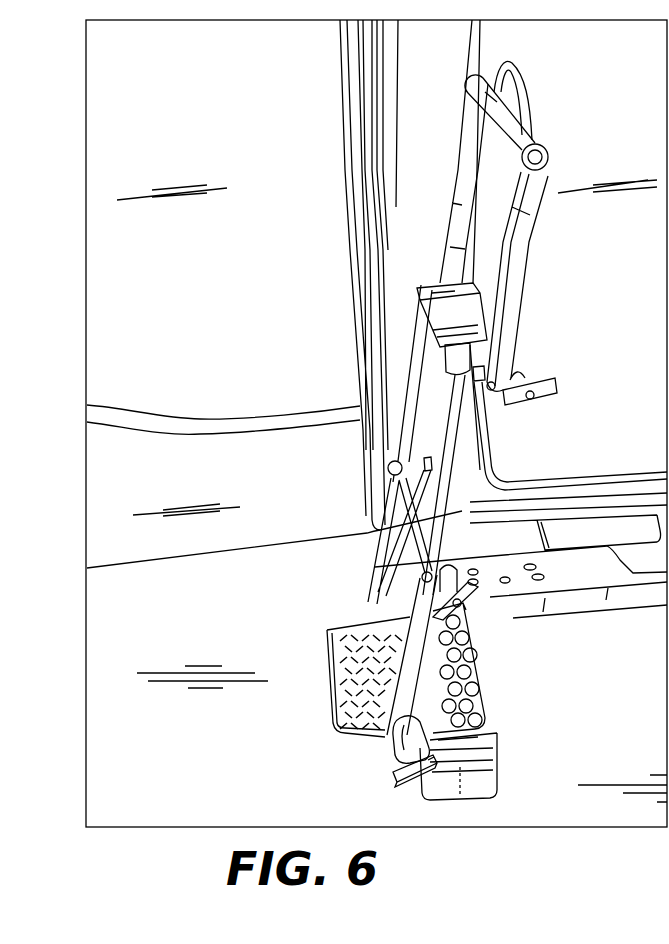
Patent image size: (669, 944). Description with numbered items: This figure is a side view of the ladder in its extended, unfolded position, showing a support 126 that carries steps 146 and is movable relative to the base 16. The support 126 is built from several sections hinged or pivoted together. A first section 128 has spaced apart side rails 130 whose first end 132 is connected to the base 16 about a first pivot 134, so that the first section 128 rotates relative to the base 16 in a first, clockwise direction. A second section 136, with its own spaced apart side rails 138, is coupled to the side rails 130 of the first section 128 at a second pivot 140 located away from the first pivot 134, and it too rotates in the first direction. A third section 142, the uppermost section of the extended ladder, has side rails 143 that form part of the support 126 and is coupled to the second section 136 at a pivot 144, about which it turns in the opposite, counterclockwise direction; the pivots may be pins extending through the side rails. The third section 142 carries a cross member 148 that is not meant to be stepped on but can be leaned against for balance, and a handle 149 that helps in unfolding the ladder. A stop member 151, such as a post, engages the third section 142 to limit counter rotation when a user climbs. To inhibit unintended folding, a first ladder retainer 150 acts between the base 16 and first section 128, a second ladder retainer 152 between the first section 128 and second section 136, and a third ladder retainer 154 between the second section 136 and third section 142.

The base 16 is at (462, 797).
The support 126 is at (333, 678).
The first section 128 is at (473, 657).
The side rails 130 is at (376, 571).
The first end 132 is at (377, 737).
The first pivot 134 is at (395, 740).
The second section 136 is at (482, 468).
The side rails 138 is at (413, 395).
The second pivot 140 is at (363, 604).
The third section 142 is at (532, 307).
The side rails 143 is at (455, 205).
The pivot 144 is at (483, 375).
The steps 146 is at (443, 312).
The cross member 148 is at (487, 110).
The handle 149 is at (512, 102).
The first ladder retainer 150 is at (431, 777).
The stop member 151 is at (445, 358).
The second ladder retainer 152 is at (473, 618).
The third ladder retainer 154 is at (557, 395).